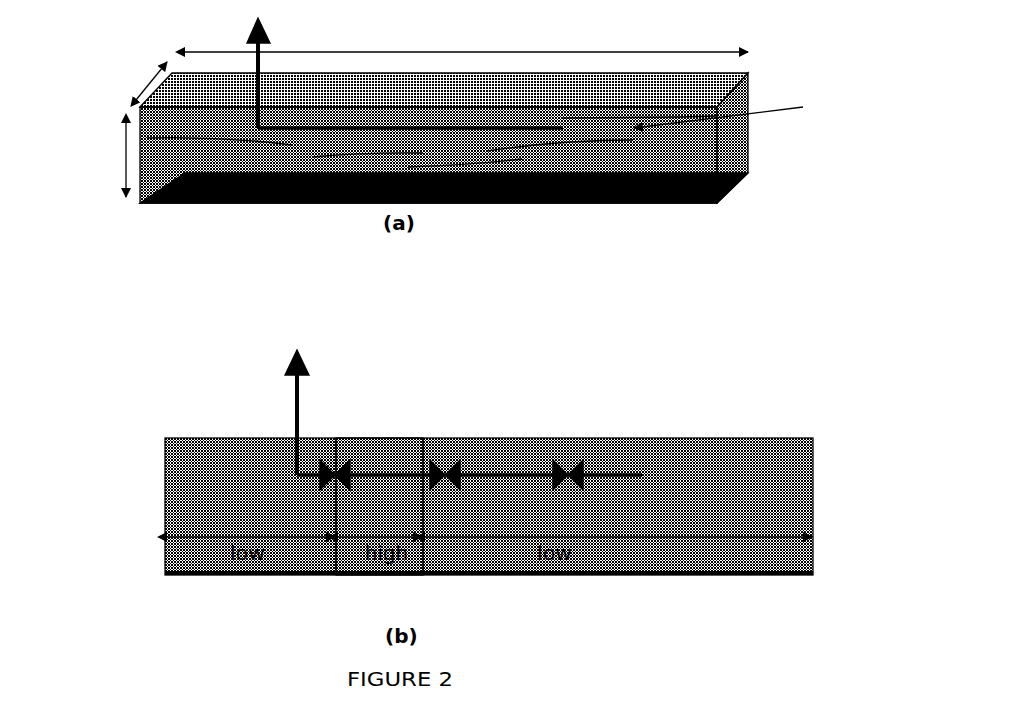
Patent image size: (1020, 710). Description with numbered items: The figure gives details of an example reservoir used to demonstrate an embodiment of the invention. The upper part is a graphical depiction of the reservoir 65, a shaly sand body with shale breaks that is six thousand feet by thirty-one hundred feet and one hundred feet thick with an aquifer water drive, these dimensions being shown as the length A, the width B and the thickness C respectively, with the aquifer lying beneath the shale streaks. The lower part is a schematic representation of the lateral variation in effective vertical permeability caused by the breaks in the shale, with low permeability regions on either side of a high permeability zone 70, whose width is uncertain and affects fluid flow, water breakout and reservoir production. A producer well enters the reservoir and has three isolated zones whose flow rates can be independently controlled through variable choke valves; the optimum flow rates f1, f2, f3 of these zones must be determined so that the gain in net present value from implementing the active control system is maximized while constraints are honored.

The reservoir 65 is at (48, 151).
The high permeability zone 70 is at (383, 438).
The reservoir length dimension A is at (466, 37).
The reservoir width dimension B is at (146, 76).
The reservoir thickness dimension C is at (111, 159).
The first zone flow rate f1 is at (339, 447).
The second zone flow rate f2 is at (445, 447).
The third zone flow rate f3 is at (555, 447).